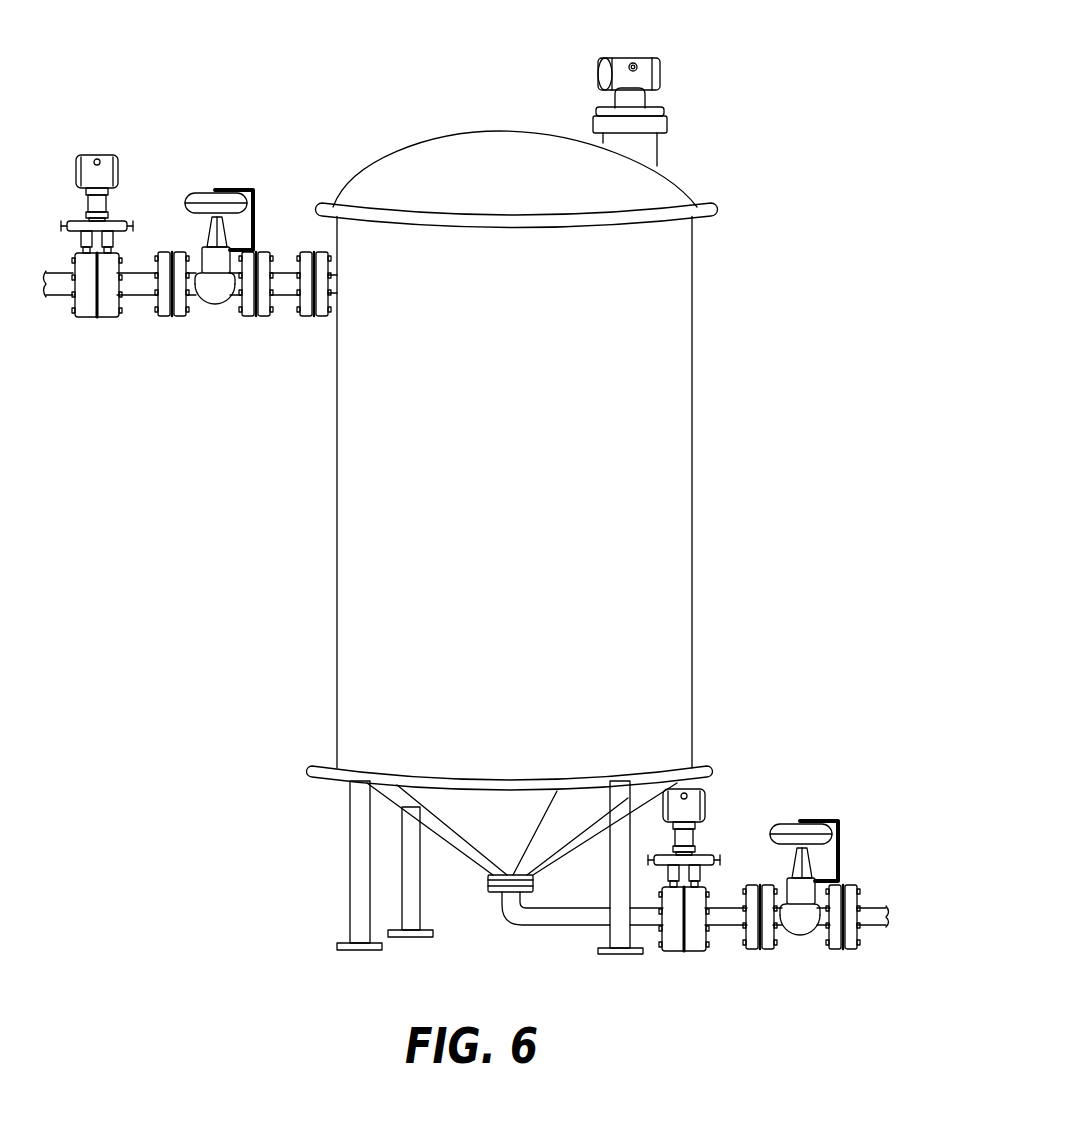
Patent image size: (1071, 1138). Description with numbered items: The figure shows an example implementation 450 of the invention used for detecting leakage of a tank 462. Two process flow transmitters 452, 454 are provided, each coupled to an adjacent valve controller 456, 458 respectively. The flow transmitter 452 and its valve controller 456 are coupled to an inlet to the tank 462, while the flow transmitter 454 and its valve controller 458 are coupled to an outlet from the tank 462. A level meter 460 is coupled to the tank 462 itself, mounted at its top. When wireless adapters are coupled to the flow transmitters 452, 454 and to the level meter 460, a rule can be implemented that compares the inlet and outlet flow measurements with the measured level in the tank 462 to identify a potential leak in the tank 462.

The vessel system 450 is at (882, 92).
The process flow transmitter 452 is at (92, 155).
The process flow transmitter 454 is at (706, 808).
The valve controller 456 is at (210, 193).
The valve controller 458 is at (793, 938).
The level meter 460 is at (660, 70).
The tank 462 is at (358, 480).